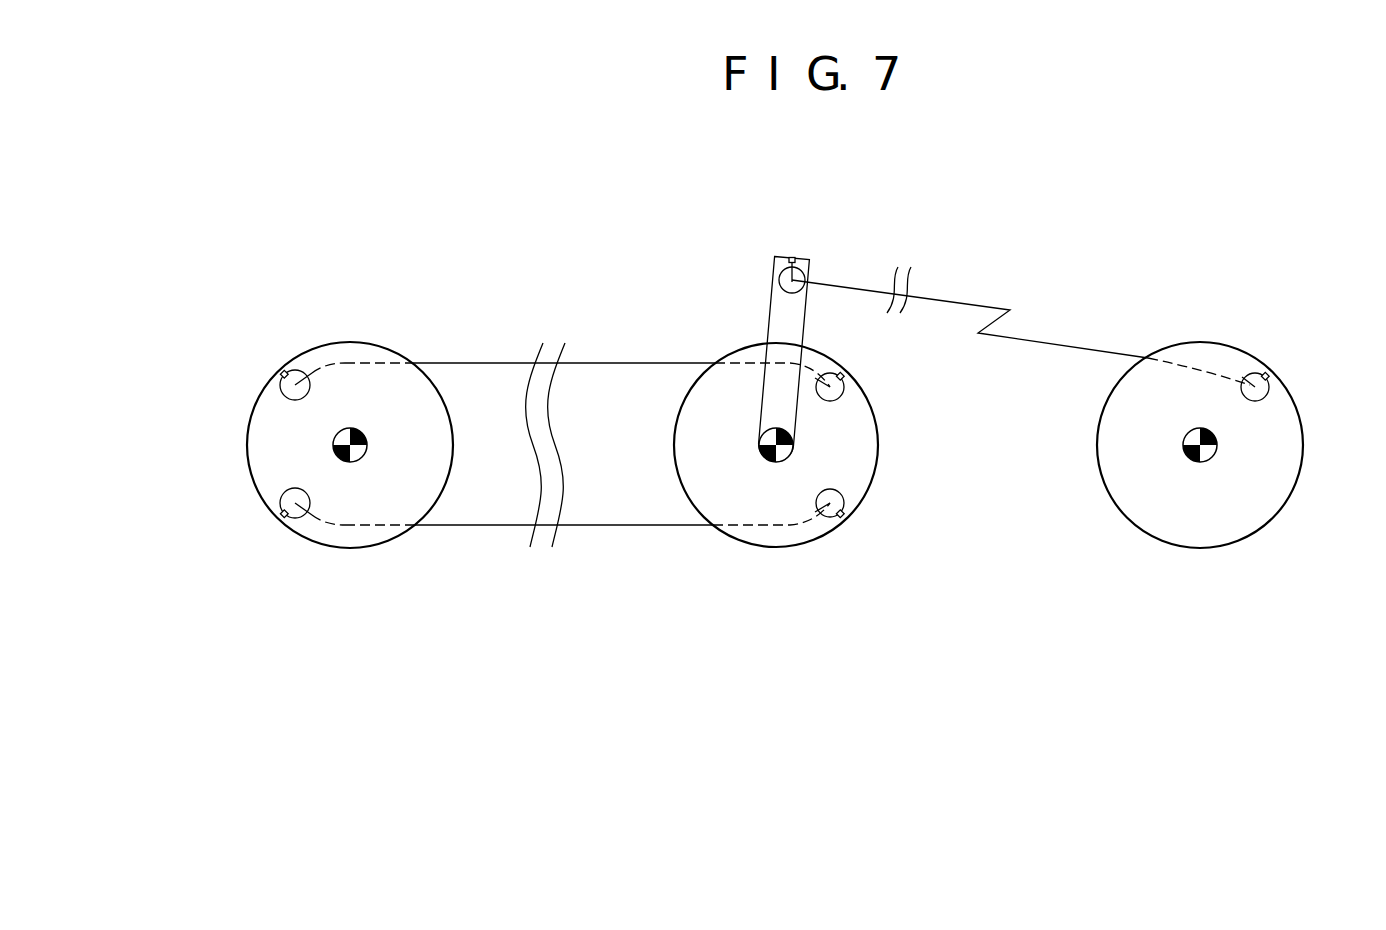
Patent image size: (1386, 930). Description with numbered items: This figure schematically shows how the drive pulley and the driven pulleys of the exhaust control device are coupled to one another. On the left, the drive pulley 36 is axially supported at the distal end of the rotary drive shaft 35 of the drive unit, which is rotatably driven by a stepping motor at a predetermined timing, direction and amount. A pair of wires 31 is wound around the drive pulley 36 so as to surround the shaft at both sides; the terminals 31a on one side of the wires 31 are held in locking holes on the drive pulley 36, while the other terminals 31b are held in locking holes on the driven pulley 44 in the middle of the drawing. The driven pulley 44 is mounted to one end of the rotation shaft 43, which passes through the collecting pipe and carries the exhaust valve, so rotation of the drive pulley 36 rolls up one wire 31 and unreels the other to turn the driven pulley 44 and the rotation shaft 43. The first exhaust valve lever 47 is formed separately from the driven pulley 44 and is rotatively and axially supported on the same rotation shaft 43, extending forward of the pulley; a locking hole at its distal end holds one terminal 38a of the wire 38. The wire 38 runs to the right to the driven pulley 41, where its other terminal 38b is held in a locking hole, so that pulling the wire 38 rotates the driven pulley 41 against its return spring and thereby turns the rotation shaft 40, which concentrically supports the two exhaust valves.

The wires 31 is at (613, 376).
The terminals 31a is at (283, 384).
The other terminals 31b is at (846, 396).
The rotary drive shaft 35 is at (334, 440).
The drive pulley 36 is at (251, 492).
The wire 38 is at (1071, 346).
The terminal 38a is at (792, 262).
The other terminal 38b is at (1270, 393).
The rotation shaft 40 is at (1212, 458).
The driven pulley 41 is at (1242, 346).
The rotation shaft 43 is at (792, 450).
The driven pulley 44 is at (795, 548).
The first exhaust valve lever 47 is at (772, 290).